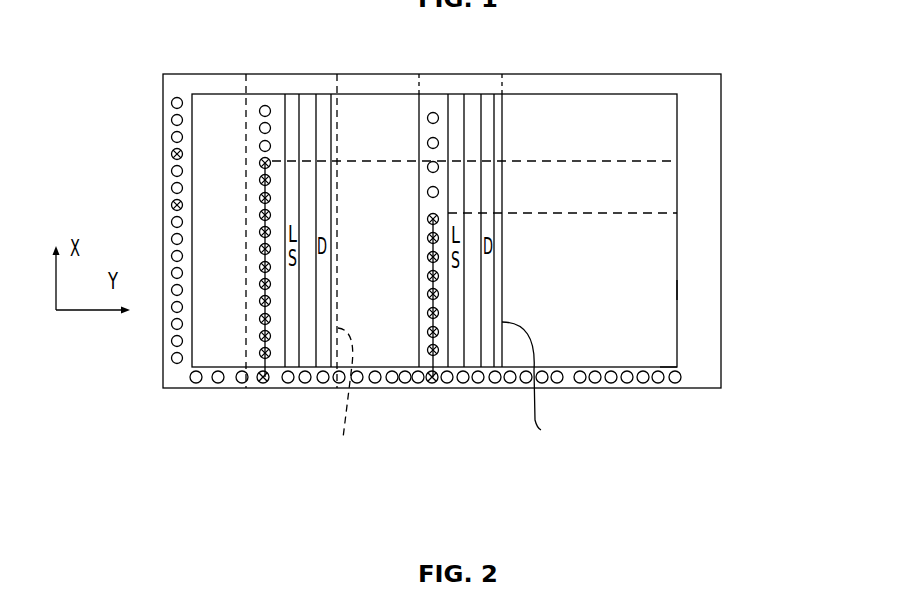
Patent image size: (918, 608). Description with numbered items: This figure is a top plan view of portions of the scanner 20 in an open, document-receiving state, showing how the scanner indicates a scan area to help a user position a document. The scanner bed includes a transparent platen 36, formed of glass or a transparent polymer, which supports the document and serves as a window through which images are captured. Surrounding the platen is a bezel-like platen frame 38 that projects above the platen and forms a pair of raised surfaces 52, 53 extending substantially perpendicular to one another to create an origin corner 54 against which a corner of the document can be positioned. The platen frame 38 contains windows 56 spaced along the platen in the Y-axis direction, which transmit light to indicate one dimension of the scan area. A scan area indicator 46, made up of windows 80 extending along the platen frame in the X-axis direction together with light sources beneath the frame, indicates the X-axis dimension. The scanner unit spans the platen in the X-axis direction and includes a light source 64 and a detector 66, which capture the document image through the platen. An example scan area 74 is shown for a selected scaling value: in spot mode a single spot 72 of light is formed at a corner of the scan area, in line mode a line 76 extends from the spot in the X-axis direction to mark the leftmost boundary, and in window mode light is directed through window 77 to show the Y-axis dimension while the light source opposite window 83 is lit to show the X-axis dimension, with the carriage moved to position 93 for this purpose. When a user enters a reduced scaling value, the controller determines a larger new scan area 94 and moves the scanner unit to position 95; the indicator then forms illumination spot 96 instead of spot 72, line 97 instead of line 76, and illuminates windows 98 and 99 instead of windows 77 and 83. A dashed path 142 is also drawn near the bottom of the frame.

The scanner 20 is at (196, 54).
The platen 36 is at (655, 233).
The platen frame 38 is at (168, 112).
The scan area indicator 46 is at (159, 226).
The raised surface 52 is at (622, 368).
The raised surface 53 is at (677, 288).
The origin corner 54 is at (663, 356).
The windows 56 is at (659, 383).
The light source 64 is at (292, 352).
The detector 66 is at (313, 355).
The spot 72 is at (427, 217).
The scan area 74 is at (608, 229).
The line 76 is at (414, 288).
The window 77 is at (437, 383).
The windows 80 is at (159, 259).
The window 83 is at (170, 205).
The position 93 is at (507, 119).
The scan area 94 is at (597, 165).
The position 95 is at (337, 110).
The illumination spot 96 is at (258, 162).
The line 97 is at (260, 264).
The window 98 is at (265, 383).
The window 99 is at (170, 152).
The fluid path 142 is at (447, 393).